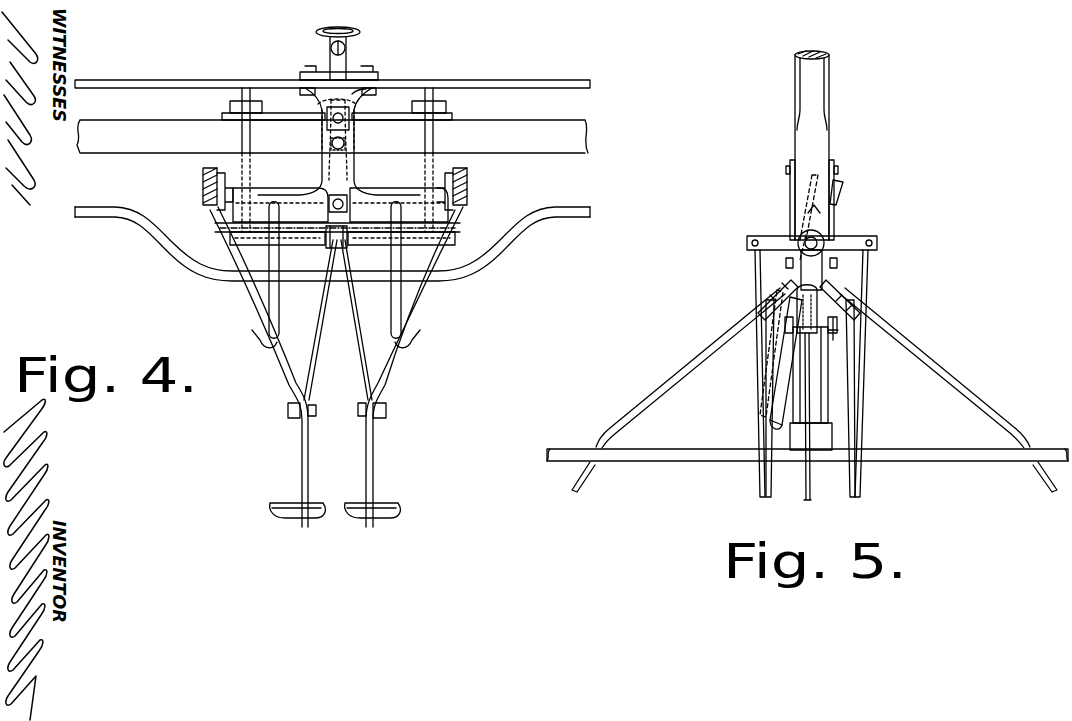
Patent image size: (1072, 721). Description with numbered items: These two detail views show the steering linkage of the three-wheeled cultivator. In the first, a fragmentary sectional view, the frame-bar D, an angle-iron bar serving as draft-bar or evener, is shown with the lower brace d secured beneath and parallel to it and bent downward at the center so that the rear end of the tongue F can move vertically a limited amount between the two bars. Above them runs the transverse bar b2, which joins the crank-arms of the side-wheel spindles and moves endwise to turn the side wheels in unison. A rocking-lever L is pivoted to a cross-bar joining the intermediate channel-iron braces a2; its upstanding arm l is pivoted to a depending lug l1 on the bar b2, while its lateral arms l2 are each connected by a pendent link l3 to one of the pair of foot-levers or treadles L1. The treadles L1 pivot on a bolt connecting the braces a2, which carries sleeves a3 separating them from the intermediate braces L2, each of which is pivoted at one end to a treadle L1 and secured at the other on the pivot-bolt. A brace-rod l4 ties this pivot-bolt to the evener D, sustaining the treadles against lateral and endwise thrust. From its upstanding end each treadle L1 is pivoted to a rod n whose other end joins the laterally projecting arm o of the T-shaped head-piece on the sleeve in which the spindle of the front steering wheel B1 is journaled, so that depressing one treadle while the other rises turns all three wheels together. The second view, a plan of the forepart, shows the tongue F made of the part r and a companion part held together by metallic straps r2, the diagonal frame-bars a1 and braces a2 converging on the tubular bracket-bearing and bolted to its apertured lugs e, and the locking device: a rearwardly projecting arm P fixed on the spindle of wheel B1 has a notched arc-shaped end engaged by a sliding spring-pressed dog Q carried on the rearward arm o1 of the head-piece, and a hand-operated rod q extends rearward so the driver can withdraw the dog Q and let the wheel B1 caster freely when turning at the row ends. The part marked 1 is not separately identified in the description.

In FIG. 4, the transverse rod or bar b2 is at (473, 80).
In FIG. 4, the frame-bar / cross-bar and evener D is at (120, 145).
In FIG. 5, the frame-bar / cross-bar and evener D is at (674, 455).
In FIG. 4, the lower bar or brace d is at (117, 214).
In FIG. 4, the hand-operated connecting rod q is at (331, 49).
In FIG. 5, the hand-operated connecting rod q is at (811, 484).
In FIG. 4, the rod n is at (234, 106).
In FIG. 5, the rod n is at (790, 300).
In FIG. 4, the laterally projecting arm o is at (224, 116).
In FIG. 5, the laterally projecting arm o is at (764, 240).
In FIG. 4, the rearwardly extending arm o1 is at (320, 113).
In FIG. 5, the rearwardly extending arm o1 is at (792, 320).
In FIG. 4, the upstanding arm l is at (330, 128).
In FIG. 4, the depending lug l1 is at (352, 104).
In FIG. 4, the brace-rod or bar l4 is at (356, 140).
In FIG. 4, the rocking-lever L is at (355, 173).
In FIG. 4, the lateral arms l2 is at (286, 204).
In FIG. 4, the pendent rod or link l3 is at (428, 304).
In FIG. 4, the intermediate braces a2 is at (480, 189).
In FIG. 5, the intermediate braces a2 is at (876, 427).
In FIG. 4, the sleeves a3 is at (375, 240).
In FIG. 4, the foot-levers or treadles L1 is at (410, 378).
In FIG. 4, the intermediate braces or supports L2 is at (366, 363).
In FIG. 5, the tongue or pole F is at (818, 130).
In FIG. 5, the metallic straps r2 is at (790, 180).
In FIG. 5, the front steering wheel B1 is at (842, 192).
In FIG. 5, the apertured lugs or ears e is at (804, 218).
In FIG. 5, the tongue part r is at (812, 205).
In FIG. 5, the rearwardly projecting arm P is at (778, 282).
In FIG. 5, the hub 1 is at (822, 366).
In FIG. 5, the sliding spring-pressed dog Q is at (835, 330).
In FIG. 5, the diagonally arranged frame-bars a1 is at (960, 364).